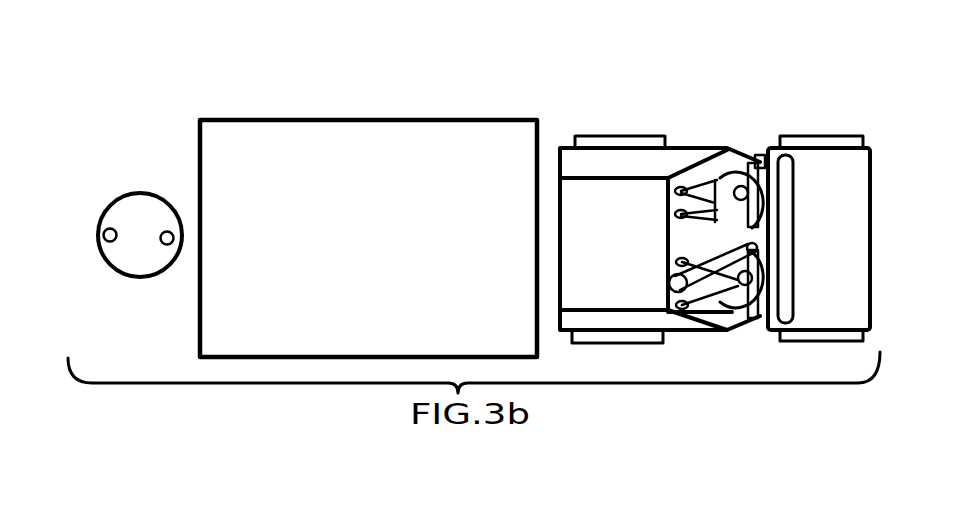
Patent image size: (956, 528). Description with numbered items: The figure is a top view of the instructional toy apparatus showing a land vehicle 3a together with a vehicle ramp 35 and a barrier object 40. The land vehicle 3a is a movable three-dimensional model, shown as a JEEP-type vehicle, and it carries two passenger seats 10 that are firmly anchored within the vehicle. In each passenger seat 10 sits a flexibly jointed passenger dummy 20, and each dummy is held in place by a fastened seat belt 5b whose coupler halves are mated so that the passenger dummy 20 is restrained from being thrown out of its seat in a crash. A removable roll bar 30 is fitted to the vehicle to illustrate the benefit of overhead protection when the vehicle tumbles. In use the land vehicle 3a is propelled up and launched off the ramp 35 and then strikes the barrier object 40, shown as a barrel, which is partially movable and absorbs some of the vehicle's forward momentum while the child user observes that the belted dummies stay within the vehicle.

The barrier object 40 is at (123, 195).
The vehicle ramp 35 is at (309, 118).
The land vehicle 3a is at (562, 147).
The roll bar 30 is at (795, 190).
The passenger figure 20 is at (727, 178).
The passenger seat 10 is at (753, 155).
The fastened seat belt 5b is at (758, 155).